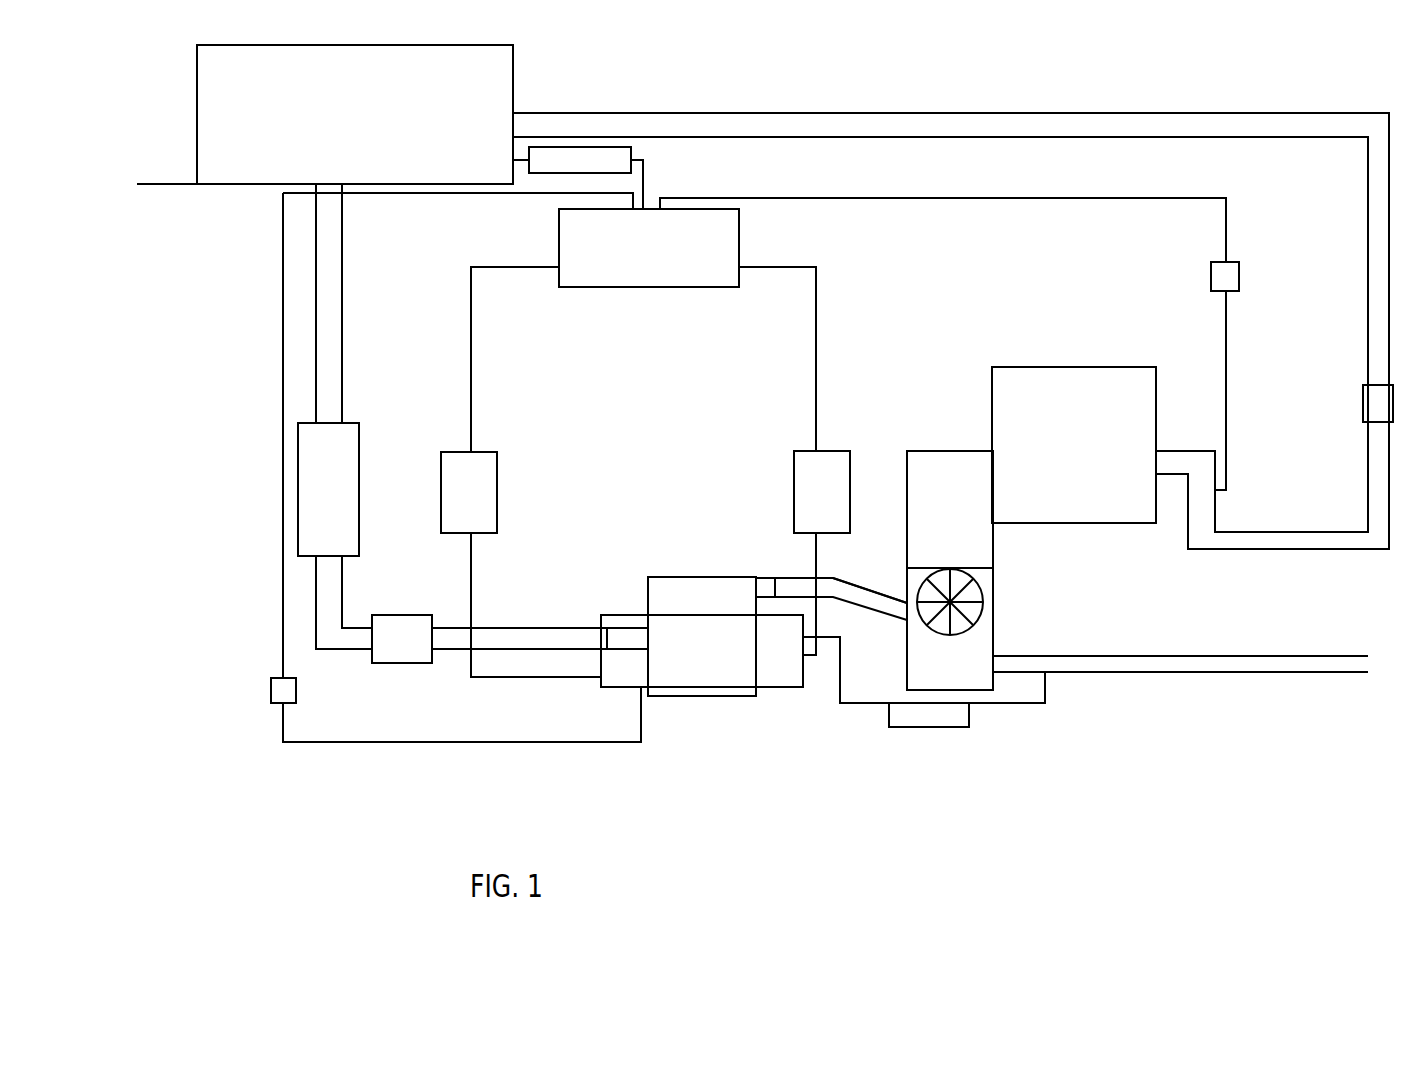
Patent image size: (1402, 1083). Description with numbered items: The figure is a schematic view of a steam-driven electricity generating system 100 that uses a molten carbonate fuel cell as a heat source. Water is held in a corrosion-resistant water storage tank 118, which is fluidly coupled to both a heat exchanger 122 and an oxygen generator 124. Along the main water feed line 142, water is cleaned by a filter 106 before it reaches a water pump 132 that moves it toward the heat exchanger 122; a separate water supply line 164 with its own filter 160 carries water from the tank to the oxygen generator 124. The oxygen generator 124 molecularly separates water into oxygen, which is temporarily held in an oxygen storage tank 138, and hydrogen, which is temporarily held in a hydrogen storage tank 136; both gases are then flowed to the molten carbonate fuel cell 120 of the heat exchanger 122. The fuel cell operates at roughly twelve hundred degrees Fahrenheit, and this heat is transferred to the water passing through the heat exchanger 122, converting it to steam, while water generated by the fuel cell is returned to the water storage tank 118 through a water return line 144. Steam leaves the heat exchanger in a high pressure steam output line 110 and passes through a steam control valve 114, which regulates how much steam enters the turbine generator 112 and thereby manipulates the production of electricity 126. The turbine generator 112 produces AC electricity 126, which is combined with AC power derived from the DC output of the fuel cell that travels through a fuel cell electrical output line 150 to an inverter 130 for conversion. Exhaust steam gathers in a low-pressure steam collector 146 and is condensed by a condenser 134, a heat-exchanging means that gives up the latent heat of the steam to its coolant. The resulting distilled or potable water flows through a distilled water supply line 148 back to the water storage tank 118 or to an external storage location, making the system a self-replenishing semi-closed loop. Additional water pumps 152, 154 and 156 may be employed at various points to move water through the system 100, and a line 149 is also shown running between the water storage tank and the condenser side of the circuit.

The steam-driven electricity generating system 100 is at (347, 837).
The filter 106 is at (297, 489).
The high pressure steam output line 110 is at (851, 580).
The turbine generator 112 is at (993, 628).
The steam control valve 114 is at (757, 577).
The water storage tank 118 is at (272, 184).
The molten carbonate fuel cell 120 is at (774, 687).
The heat exchanger 122 is at (702, 695).
The oxygen generator 124 is at (587, 287).
The electricity 126 is at (1087, 672).
The inverter 130 is at (928, 727).
The water pump 132 is at (419, 663).
The condenser 134 is at (1015, 367).
The hydrogen storage tank 136 is at (814, 463).
The oxygen storage tank 138 is at (477, 462).
The main water feed line 142 is at (328, 380).
The water return line 144 is at (618, 742).
The low-pressure steam collector 146 is at (993, 542).
The distilled water supply line 148 is at (957, 119).
The control line 149 is at (806, 198).
The fuel cell electrical output line 150 is at (840, 703).
The water pump 152 is at (1237, 291).
The water pump 154 is at (1363, 393).
The water pump 156 is at (271, 704).
The filter 160 is at (547, 173).
The water supply line 164 is at (643, 160).